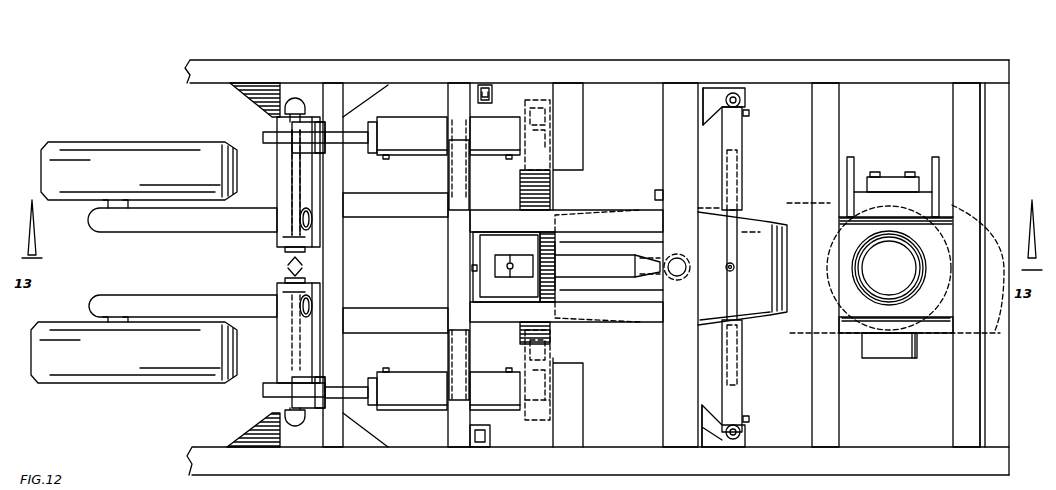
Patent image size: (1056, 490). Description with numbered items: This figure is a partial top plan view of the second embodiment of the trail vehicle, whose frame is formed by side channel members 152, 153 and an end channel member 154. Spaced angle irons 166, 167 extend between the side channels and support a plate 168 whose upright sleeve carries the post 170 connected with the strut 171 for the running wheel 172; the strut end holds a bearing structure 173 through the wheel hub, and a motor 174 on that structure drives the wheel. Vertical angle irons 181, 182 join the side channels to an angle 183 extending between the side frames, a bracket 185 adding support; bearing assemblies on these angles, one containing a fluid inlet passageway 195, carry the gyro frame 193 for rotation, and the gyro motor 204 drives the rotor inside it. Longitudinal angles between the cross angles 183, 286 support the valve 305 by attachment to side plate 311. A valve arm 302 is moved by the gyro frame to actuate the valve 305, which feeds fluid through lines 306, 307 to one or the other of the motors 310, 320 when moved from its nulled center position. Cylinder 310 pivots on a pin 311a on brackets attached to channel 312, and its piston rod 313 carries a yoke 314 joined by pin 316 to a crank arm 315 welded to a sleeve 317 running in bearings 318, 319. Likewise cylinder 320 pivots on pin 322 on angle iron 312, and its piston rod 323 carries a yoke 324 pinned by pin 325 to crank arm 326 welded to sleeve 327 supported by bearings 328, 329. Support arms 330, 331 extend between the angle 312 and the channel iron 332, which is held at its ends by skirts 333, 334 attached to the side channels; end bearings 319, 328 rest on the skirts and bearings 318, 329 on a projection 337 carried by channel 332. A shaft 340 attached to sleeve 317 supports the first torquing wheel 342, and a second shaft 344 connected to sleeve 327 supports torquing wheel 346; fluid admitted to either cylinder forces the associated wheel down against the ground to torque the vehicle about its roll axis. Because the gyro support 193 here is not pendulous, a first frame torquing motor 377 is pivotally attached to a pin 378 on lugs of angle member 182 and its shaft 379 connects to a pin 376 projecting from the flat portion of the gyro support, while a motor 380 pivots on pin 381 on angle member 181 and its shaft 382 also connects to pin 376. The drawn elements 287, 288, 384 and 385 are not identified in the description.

The side channel member 152 is at (968, 466).
The side channel member 153 is at (645, 66).
The end channel member 154 is at (993, 431).
The angle iron 166 is at (955, 412).
The angle iron 167 is at (830, 407).
The plate 168 is at (939, 308).
The post 170 is at (911, 268).
The strut 171 is at (936, 163).
The wheel 172 is at (934, 332).
The bearing structure 173 is at (878, 350).
The motor 174 is at (886, 178).
The vertical angle iron 181 is at (718, 448).
The vertical angle iron 182 is at (720, 90).
The angle 183 is at (668, 124).
The bracket 185 is at (480, 88).
The gyro frame 193 is at (753, 210).
The fluid inlet passageway 195 is at (705, 265).
The gyro motor 204 is at (662, 195).
The cross angle 286 is at (456, 416).
The lower column portion 287 is at (455, 446).
The column 288 is at (462, 82).
The valve arm 302 is at (598, 286).
The valve 305 is at (552, 241).
The fluid line 306 is at (473, 270).
The fluid line 307 is at (508, 160).
The cylinder 310 is at (414, 373).
The side plate 311 is at (505, 230).
The pin 311a is at (548, 410).
The channel 312 is at (552, 355).
The piston rod 313 is at (357, 388).
The yoke 314 is at (300, 408).
The crank arm 315 is at (268, 399).
The pin 316 is at (292, 383).
The sleeve 317 is at (280, 345).
The bearing 318 is at (320, 278).
The bearing 319 is at (278, 415).
The cylinder 320 is at (421, 157).
The pin 322 is at (548, 150).
The piston rod 323 is at (350, 134).
The yoke 324 is at (322, 150).
The pin 325 is at (312, 124).
The crank arm 326 is at (264, 137).
The sleeve 327 is at (278, 180).
The bearing 328 is at (268, 118).
The bearing 329 is at (278, 250).
The support arm 330 is at (408, 212).
The support arm 331 is at (378, 312).
The channel iron 332 is at (343, 252).
The skirt 333 is at (298, 446).
The skirt 334 is at (271, 92).
The projection 337 is at (278, 262).
The shaft 340 is at (190, 300).
The first torquing wheel 342 is at (85, 372).
The second shaft 344 is at (205, 228).
The torquing wheel 346 is at (75, 157).
The pin 376 is at (735, 267).
The first frame torquing motor 377 is at (745, 142).
The pin 378 is at (742, 92).
The shaft 379 is at (742, 232).
The frame torquing motor 380 is at (742, 400).
The pin 381 is at (740, 440).
The shaft 382 is at (742, 312).
The port 384 is at (750, 113).
The port 385 is at (750, 420).